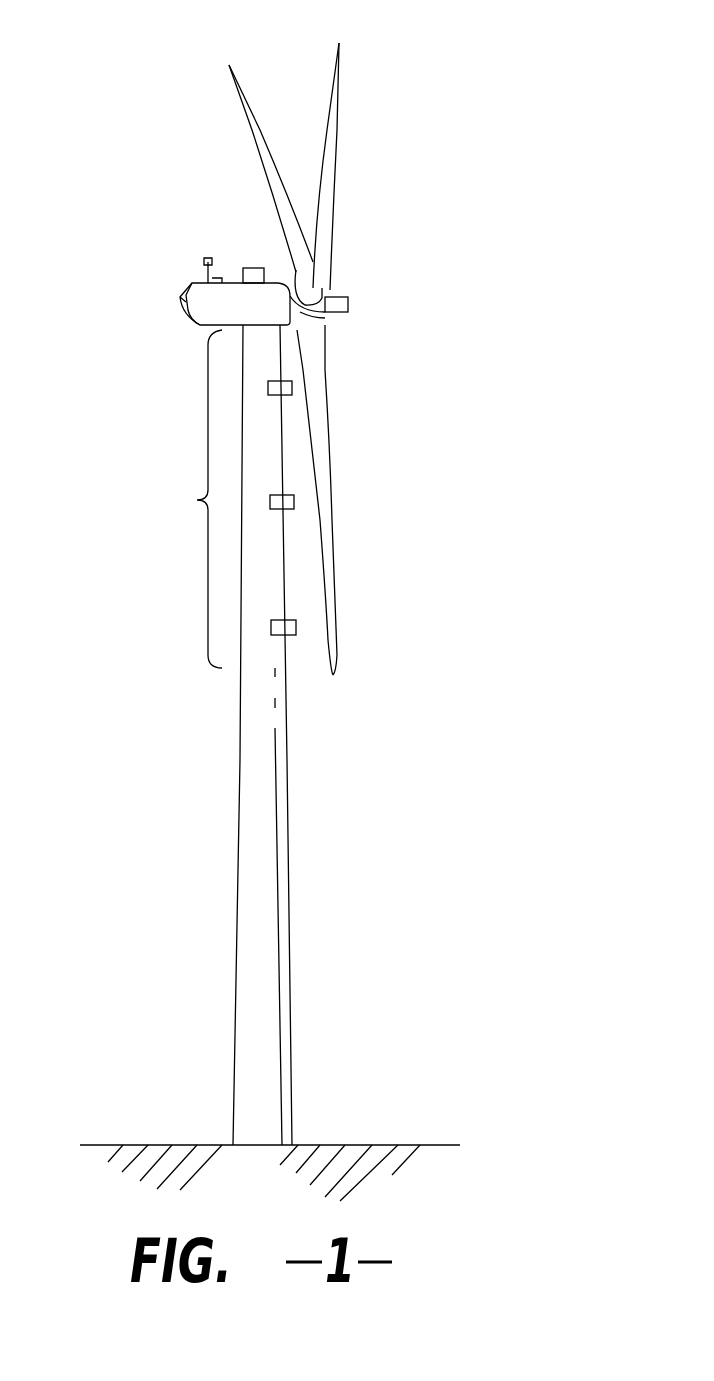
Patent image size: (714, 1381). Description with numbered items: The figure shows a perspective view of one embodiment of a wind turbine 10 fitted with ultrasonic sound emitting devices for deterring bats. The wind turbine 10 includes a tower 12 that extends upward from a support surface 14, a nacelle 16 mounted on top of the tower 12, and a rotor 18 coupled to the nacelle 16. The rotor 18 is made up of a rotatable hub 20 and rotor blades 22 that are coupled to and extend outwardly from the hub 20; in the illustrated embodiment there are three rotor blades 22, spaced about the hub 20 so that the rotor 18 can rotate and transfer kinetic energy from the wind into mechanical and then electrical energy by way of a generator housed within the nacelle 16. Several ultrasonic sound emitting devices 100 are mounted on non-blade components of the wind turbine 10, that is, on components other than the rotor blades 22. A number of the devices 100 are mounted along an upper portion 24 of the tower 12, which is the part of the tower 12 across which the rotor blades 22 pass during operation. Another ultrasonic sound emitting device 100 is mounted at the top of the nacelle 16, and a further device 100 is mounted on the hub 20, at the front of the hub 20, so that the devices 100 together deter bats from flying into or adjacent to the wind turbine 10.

The wind turbine 10 is at (487, 104).
The tower 12 is at (242, 848).
The support surface 14 is at (357, 1145).
The nacelle 16 is at (198, 333).
The rotor 18 is at (374, 296).
The rotatable hub 20 is at (336, 292).
The rotor blade 22 is at (252, 143).
The upper portion 24 is at (188, 499).
The ultrasonic sound emitting device 100 is at (250, 267).